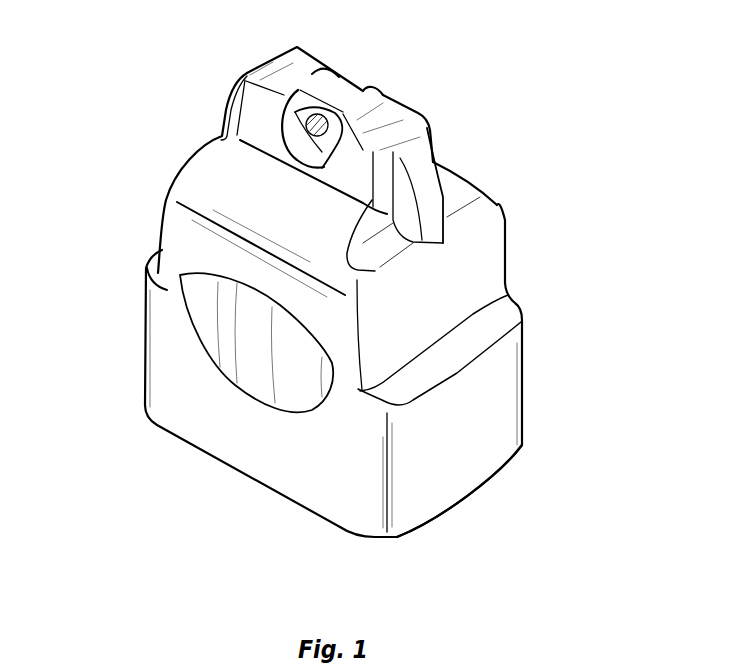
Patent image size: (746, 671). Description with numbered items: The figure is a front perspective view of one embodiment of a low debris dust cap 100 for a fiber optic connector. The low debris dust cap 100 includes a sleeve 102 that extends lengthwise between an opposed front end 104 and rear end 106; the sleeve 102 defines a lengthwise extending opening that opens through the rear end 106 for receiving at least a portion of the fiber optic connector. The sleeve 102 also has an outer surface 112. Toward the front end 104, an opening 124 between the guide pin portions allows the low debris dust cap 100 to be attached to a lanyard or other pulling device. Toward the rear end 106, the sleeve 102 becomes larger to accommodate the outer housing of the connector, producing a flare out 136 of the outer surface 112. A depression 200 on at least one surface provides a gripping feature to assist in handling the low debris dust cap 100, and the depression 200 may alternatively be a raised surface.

The low debris dust cap 100 is at (336, 300).
The sleeve 102 is at (325, 379).
The front end 104 is at (328, 138).
The rear end 106 is at (482, 505).
The outer surface 112 is at (472, 437).
The opening 124 is at (301, 111).
The flare out 136 is at (393, 463).
The depression 200 is at (205, 315).